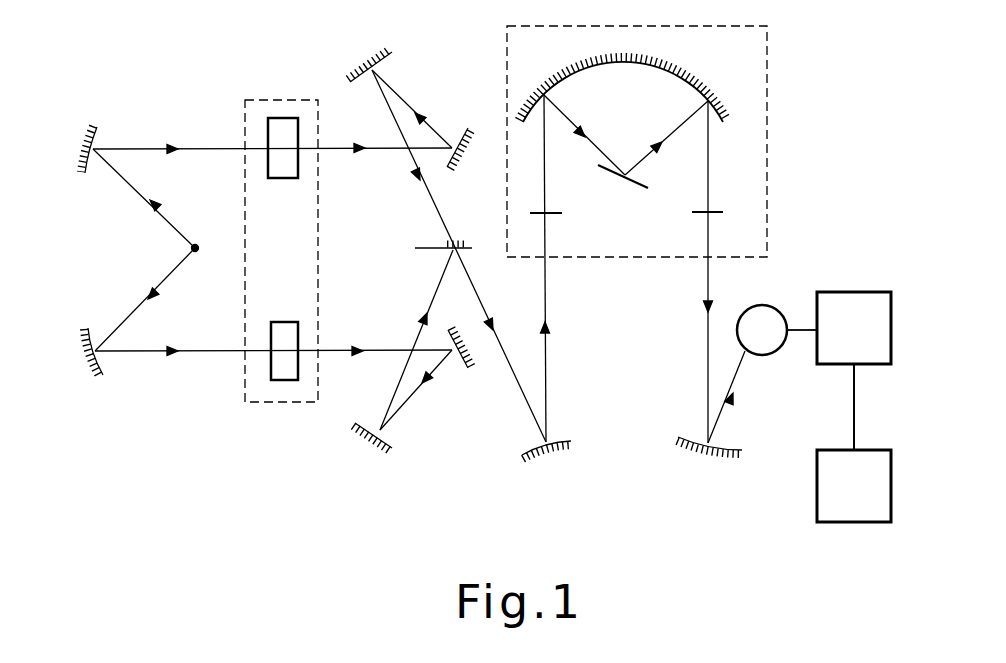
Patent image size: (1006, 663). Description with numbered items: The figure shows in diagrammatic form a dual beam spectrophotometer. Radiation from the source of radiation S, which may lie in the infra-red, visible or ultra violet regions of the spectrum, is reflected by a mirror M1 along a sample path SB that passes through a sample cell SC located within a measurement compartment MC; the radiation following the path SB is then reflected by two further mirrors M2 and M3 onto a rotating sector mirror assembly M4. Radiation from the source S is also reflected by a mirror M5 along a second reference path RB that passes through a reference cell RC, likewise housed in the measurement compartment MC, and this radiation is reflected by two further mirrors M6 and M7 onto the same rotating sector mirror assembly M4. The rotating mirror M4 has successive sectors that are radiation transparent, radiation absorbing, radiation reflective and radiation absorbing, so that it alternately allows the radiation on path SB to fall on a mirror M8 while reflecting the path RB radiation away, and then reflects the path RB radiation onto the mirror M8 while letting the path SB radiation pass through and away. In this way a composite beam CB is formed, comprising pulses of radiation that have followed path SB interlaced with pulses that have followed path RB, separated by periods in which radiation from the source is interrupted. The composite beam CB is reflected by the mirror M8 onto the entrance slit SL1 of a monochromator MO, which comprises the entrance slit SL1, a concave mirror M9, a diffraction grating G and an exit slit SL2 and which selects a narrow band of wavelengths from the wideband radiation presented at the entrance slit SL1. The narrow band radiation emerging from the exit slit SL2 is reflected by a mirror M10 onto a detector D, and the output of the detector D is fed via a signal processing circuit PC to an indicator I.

The mirror M1 is at (68, 149).
The mirror M2 is at (470, 161).
The mirror M3 is at (357, 60).
The rotating sector mirror assembly M4 is at (418, 249).
The mirror M5 is at (68, 353).
The mirror M6 is at (468, 366).
The mirror M7 is at (357, 445).
The mirror M8 is at (547, 467).
The concave mirror M9 is at (623, 79).
The mirror M10 is at (707, 464).
The source of radiation S is at (155, 250).
The sample beam path SB is at (199, 147).
The reference beam path RB is at (197, 353).
The composite beam CB is at (527, 403).
The sample cell SC is at (283, 178).
The reference cell RC is at (285, 322).
The measurement compartment MC is at (280, 98).
The monochromator MO is at (767, 58).
The diffraction grating G is at (623, 187).
The entrance slit SL1 is at (564, 229).
The exit slit SL2 is at (692, 228).
The detector D is at (774, 308).
The signal processing circuit PC is at (891, 324).
The indicator I is at (891, 496).